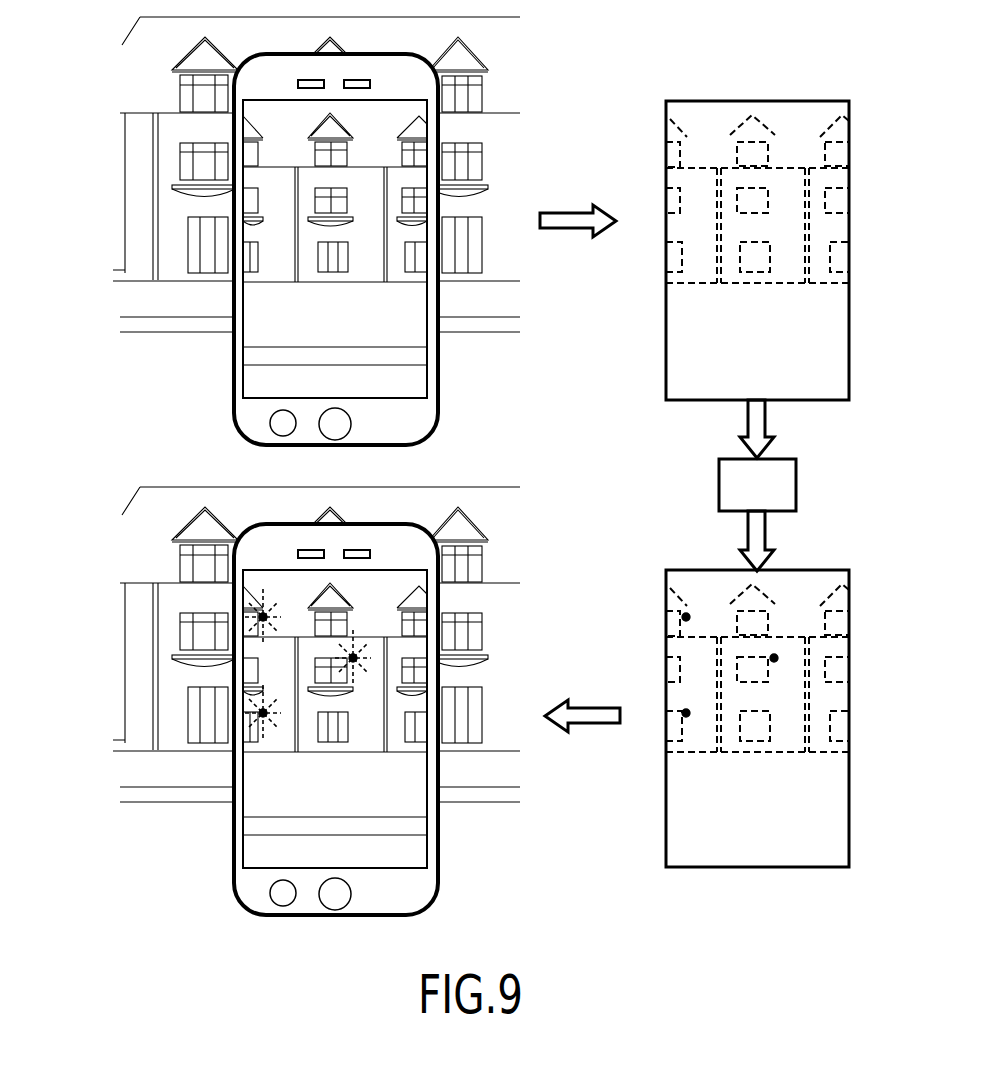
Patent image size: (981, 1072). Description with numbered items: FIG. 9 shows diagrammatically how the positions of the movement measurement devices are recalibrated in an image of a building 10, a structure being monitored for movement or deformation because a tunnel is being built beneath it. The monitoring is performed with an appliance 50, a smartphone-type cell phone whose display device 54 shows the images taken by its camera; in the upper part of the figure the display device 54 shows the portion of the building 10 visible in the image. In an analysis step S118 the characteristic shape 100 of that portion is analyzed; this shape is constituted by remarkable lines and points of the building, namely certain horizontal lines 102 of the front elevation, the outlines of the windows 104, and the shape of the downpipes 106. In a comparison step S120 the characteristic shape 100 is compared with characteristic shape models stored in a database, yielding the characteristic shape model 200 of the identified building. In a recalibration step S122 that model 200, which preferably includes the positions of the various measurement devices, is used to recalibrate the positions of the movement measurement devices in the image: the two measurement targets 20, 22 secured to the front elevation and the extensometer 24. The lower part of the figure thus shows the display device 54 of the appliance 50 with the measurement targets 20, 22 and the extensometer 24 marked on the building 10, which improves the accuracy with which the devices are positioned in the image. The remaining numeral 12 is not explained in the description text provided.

The building 10 is at (116, 42).
The building 12 is at (144, 222).
The measurement target 20 is at (264, 716).
The measurement target 22 is at (355, 660).
The extensometer 24 is at (265, 616).
The appliance 50 is at (232, 387).
The display device 54 is at (410, 380).
The characteristic shape 100 is at (757, 101).
The horizontal lines 102 is at (705, 158).
The windows 104 is at (756, 275).
The downpipes 106 is at (713, 260).
The characteristic shape model 200 is at (826, 570).
The analysis step S118 is at (565, 221).
The comparison step S120 is at (784, 498).
The recalibration step S122 is at (594, 714).